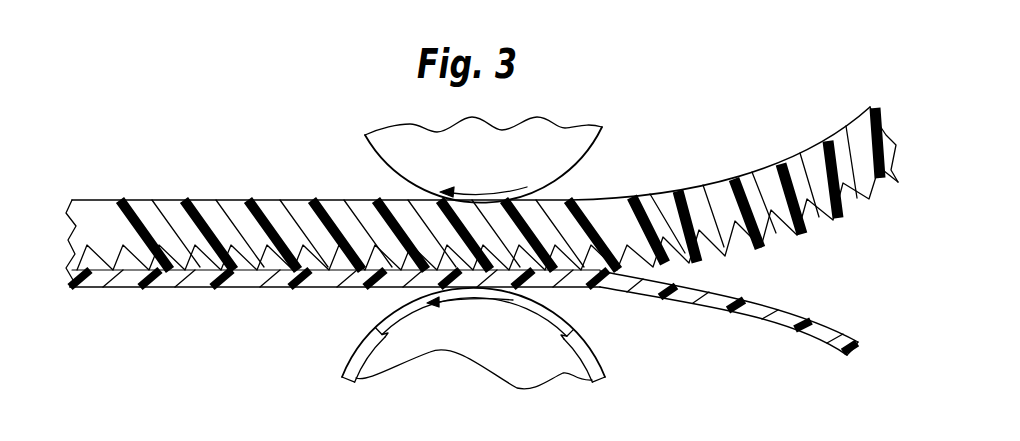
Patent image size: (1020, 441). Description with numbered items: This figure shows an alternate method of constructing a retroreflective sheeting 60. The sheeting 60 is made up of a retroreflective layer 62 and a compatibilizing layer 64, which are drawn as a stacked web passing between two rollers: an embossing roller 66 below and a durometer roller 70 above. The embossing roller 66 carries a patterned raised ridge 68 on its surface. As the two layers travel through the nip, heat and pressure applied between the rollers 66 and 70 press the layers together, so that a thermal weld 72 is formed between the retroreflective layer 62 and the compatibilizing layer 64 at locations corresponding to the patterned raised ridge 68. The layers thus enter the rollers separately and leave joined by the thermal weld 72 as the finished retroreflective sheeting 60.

The retroreflective sheeting 60 is at (272, 191).
The retroreflective layer 62 is at (802, 153).
The compatibilizing layer 64 is at (833, 350).
The embossing roller 66 is at (594, 337).
The patterned raised ridge 68 is at (578, 328).
The durometer roller 70 is at (594, 146).
The thermal weld 72 is at (376, 247).